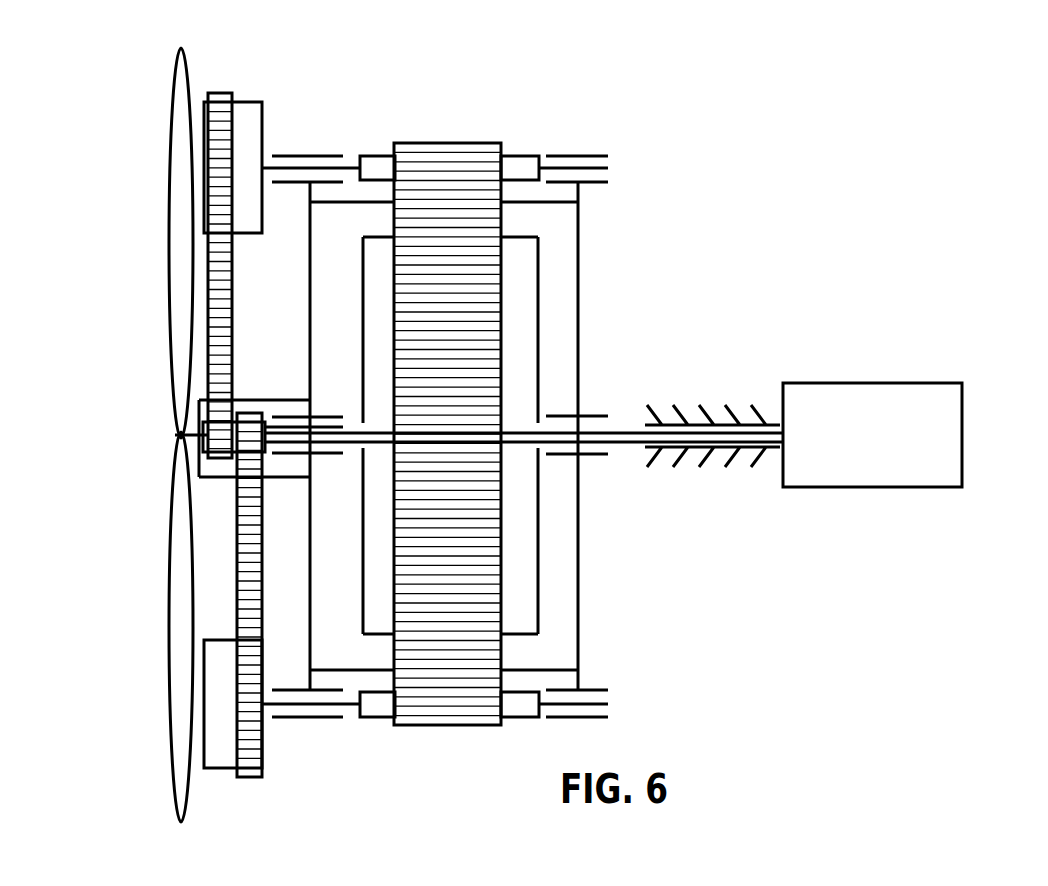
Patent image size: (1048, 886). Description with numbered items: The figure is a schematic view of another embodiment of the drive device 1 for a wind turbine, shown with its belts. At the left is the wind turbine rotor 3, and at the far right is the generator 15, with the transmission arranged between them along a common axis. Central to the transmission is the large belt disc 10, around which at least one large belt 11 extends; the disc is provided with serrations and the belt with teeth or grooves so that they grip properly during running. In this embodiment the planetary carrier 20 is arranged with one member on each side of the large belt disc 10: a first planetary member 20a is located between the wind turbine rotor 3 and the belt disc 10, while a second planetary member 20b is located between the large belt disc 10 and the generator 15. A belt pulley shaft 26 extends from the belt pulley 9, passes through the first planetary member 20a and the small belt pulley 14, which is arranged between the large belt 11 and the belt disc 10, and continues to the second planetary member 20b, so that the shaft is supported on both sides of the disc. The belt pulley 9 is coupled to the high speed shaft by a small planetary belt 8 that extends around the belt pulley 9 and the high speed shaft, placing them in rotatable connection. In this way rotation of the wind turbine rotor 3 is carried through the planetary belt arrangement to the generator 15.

The drive device 1 is at (170, 435).
The wind turbine rotor 3 is at (173, 150).
The small planetary belt 8 is at (222, 104).
The belt pulley 9 is at (249, 112).
The large belt disc 10 is at (540, 258).
The large belt 11 is at (458, 147).
The small belt pulley 14 is at (370, 154).
The generator 15 is at (873, 383).
The planetary carrier 20 is at (491, 414).
The first planetary member 20a is at (310, 302).
The second planetary member 20b is at (578, 334).
The belt pulley shaft 26 is at (608, 168).